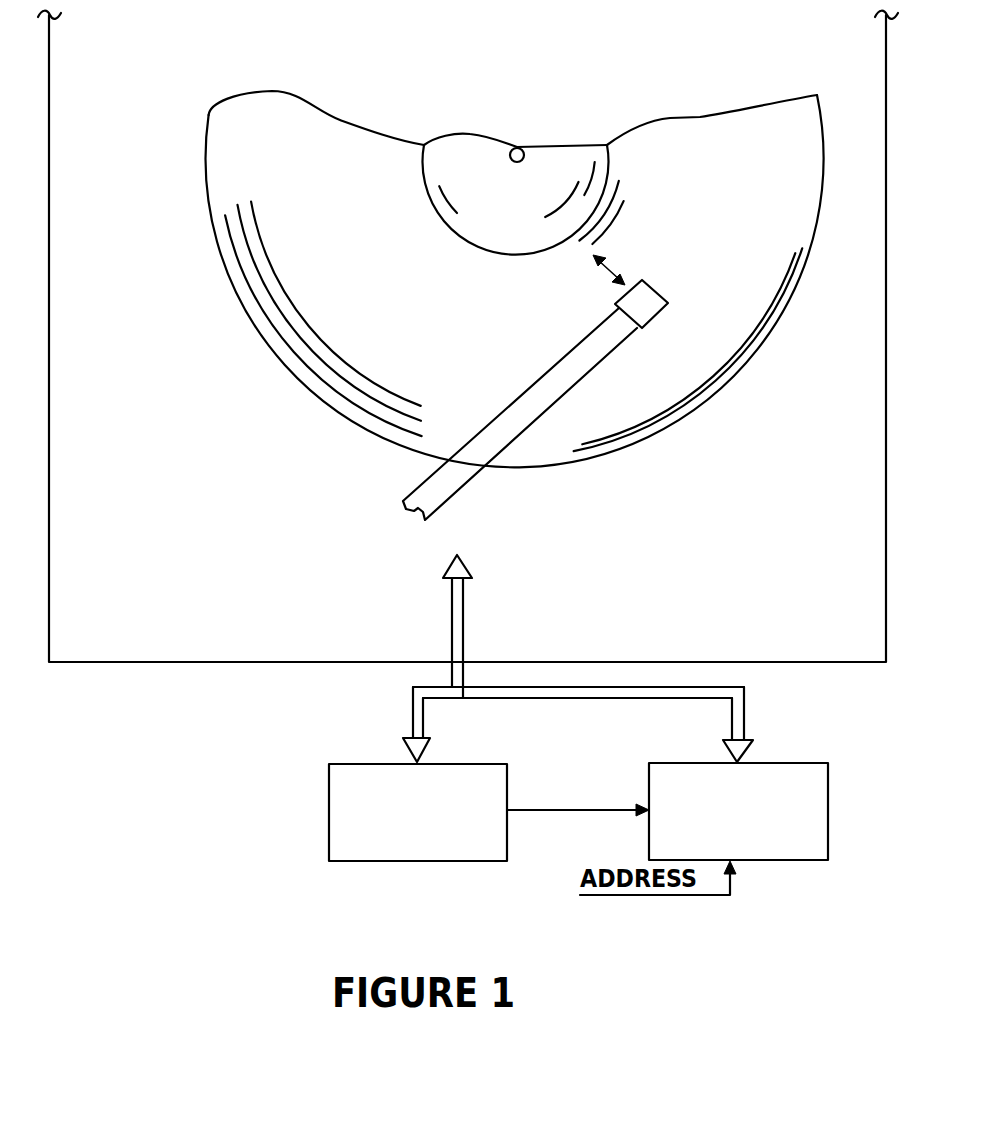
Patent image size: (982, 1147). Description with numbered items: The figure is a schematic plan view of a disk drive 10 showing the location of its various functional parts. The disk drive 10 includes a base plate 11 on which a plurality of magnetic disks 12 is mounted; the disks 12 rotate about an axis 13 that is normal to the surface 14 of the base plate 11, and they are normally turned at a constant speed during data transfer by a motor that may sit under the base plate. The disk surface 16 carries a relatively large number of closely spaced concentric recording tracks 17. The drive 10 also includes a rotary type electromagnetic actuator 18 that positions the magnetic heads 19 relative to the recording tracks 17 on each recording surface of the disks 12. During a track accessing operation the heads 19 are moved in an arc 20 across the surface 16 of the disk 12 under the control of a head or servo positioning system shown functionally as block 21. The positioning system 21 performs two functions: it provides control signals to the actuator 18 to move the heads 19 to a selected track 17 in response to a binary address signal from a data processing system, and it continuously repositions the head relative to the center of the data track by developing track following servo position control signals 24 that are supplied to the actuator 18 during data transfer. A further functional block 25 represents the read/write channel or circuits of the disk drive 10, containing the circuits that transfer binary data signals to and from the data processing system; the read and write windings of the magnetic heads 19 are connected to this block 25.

The disk drive 10 is at (481, 35).
The base plate 11 is at (93, 664).
The magnetic disk 12 is at (245, 167).
The axis 13 is at (522, 148).
The surface of the base plate 14 is at (123, 586).
The disk surface 16 is at (343, 307).
The recording tracks 17 is at (328, 380).
The rotary type electromagnetic actuator 18 is at (452, 477).
The magnetic heads 19 is at (645, 308).
The arc 20 is at (612, 264).
The head positioning system 21 is at (793, 848).
The track following servo position control signals 24 is at (574, 810).
The read/write circuits 25 is at (490, 853).